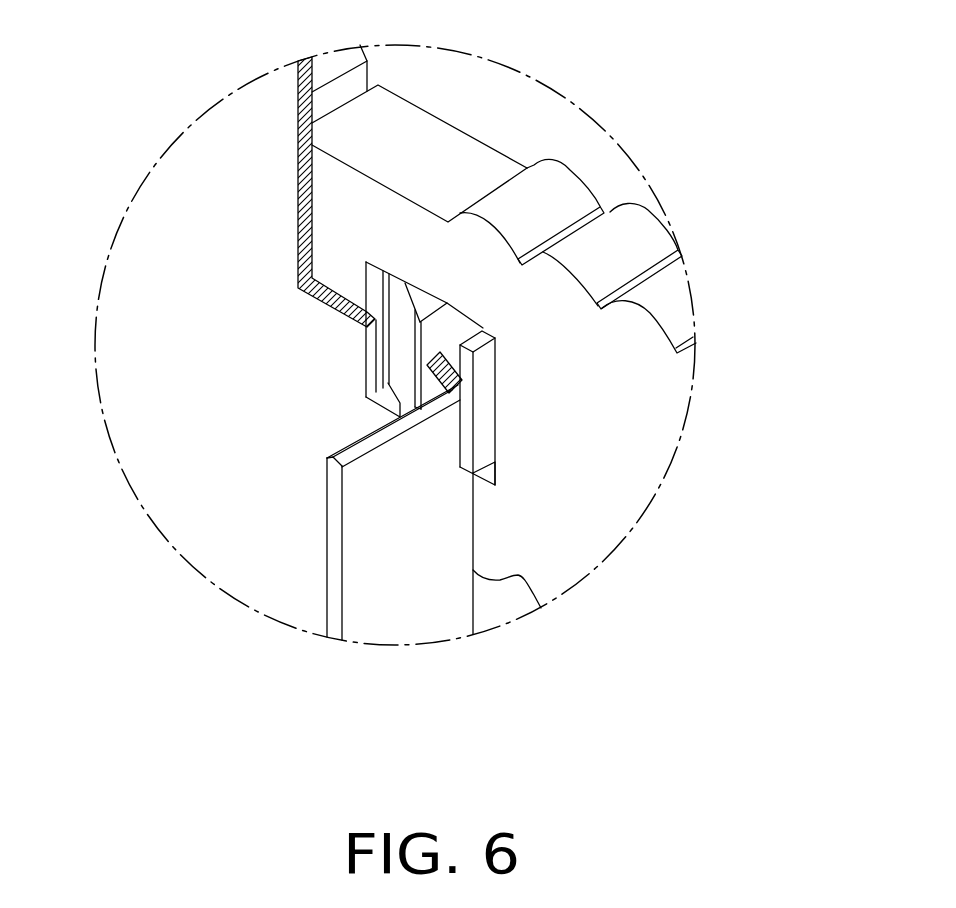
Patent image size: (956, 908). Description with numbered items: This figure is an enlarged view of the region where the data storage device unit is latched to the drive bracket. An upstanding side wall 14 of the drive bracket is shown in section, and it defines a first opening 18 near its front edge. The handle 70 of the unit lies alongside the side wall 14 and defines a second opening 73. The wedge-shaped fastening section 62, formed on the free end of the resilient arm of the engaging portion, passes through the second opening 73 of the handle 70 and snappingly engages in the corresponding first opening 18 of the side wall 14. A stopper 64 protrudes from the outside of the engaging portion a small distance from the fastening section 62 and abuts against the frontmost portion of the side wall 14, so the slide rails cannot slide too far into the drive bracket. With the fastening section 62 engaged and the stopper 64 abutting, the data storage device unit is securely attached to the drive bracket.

The side wall 14 is at (232, 490).
The first opening 18 is at (370, 365).
The fastening section 62 is at (574, 268).
The stopper 64 is at (628, 349).
The handle 70 is at (623, 428).
The second opening 73 is at (528, 188).